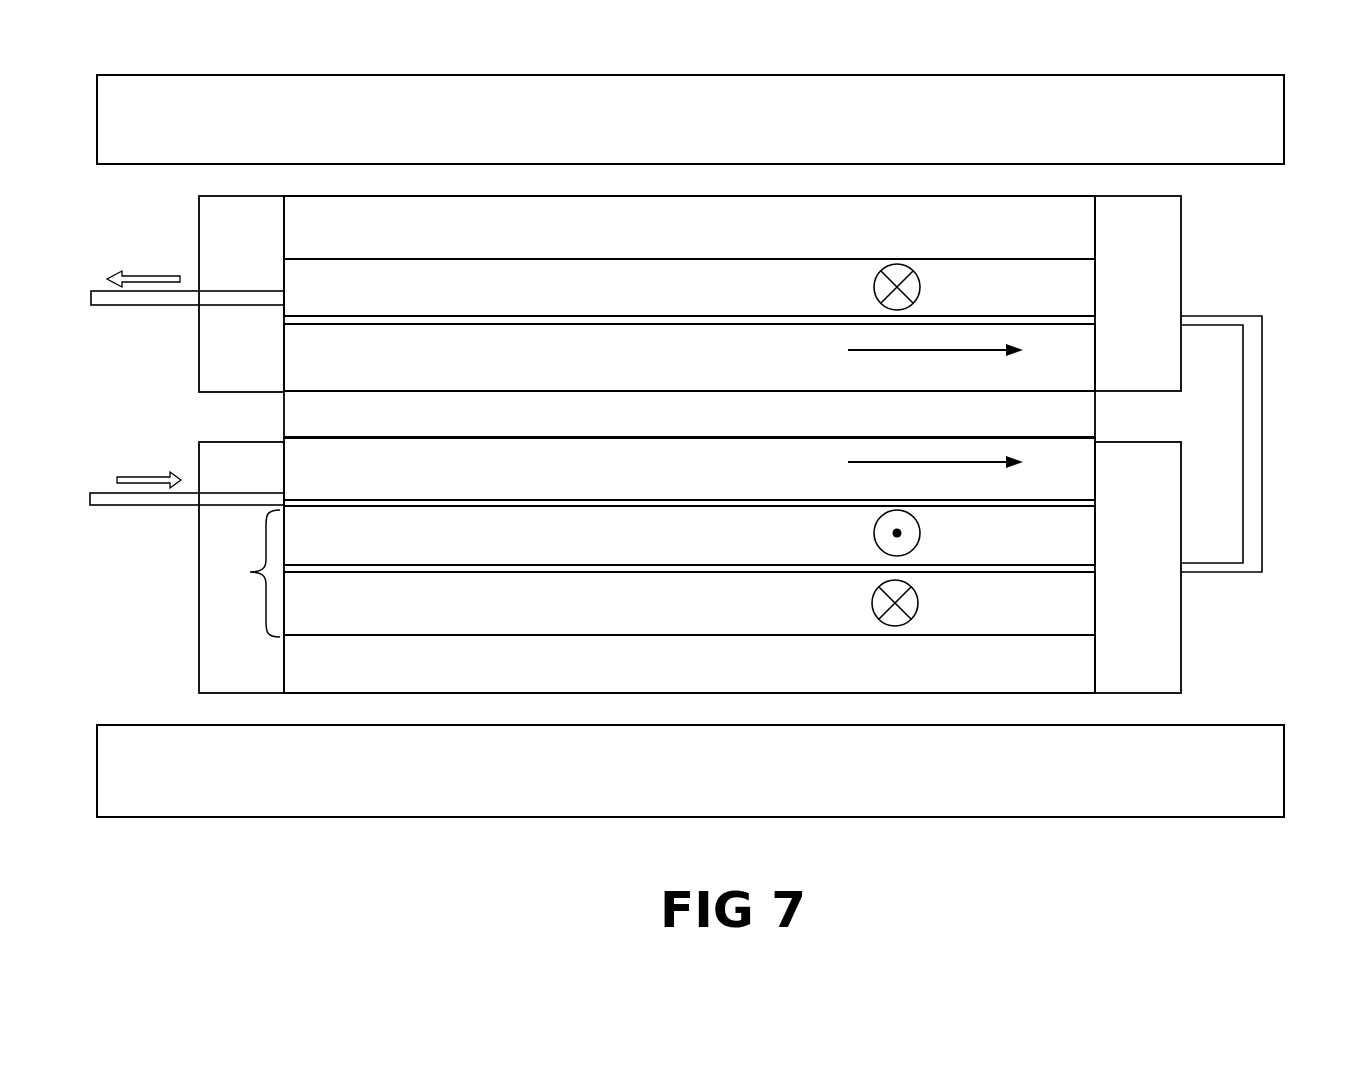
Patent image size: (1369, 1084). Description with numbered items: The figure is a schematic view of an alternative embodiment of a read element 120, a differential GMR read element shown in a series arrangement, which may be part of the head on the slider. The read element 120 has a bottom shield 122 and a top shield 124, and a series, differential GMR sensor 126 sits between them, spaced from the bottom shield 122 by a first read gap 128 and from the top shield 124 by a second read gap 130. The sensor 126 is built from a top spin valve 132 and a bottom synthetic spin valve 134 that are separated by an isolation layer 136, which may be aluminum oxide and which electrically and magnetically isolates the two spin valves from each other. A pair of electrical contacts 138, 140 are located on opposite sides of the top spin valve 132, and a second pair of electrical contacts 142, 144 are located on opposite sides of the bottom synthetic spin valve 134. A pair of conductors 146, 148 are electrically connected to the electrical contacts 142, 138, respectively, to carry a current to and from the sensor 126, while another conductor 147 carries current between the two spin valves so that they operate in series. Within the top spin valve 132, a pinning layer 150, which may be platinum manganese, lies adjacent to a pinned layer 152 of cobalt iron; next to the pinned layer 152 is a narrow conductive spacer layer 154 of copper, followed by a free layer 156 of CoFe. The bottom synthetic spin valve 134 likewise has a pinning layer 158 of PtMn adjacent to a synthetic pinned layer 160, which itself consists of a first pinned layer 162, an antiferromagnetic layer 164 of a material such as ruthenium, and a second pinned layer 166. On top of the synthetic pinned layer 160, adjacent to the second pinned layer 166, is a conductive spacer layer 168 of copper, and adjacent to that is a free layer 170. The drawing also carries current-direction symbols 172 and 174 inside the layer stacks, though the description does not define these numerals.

The read element 120 is at (695, 481).
The bottom shield 122 is at (326, 787).
The top shield 124 is at (319, 137).
The series differential GMR sensor 126 is at (695, 576).
The first read gap 128 is at (189, 578).
The second read gap 130 is at (709, 287).
The top spin valve 132 is at (1210, 293).
The bottom synthetic spin valve 134 is at (1217, 567).
The isolation layer 136 is at (402, 430).
The electrical contact 138 is at (217, 263).
The electrical contact 140 is at (1114, 235).
The electrical contact 142 is at (217, 492).
The electrical contact 144 is at (1113, 670).
The conductor 146 is at (160, 297).
The conductor 147 is at (1256, 411).
The conductor 148 is at (113, 498).
The pinning layer 150 is at (403, 242).
The pinned layer 152 is at (402, 298).
The conductive spacer layer 154 is at (1083, 322).
The free layer 156 is at (402, 372).
The pinning layer 158 is at (402, 682).
The synthetic pinned layer 160 is at (232, 573).
The first pinned layer 162 is at (402, 618).
The antiferromagnetic layer 164 is at (1073, 568).
The second pinned layer 166 is at (402, 552).
The conductive spacer layer 168 is at (1073, 502).
The free layer 170 is at (402, 483).
The current into page symbol 172 is at (920, 287).
The current out of page symbol 174 is at (920, 533).